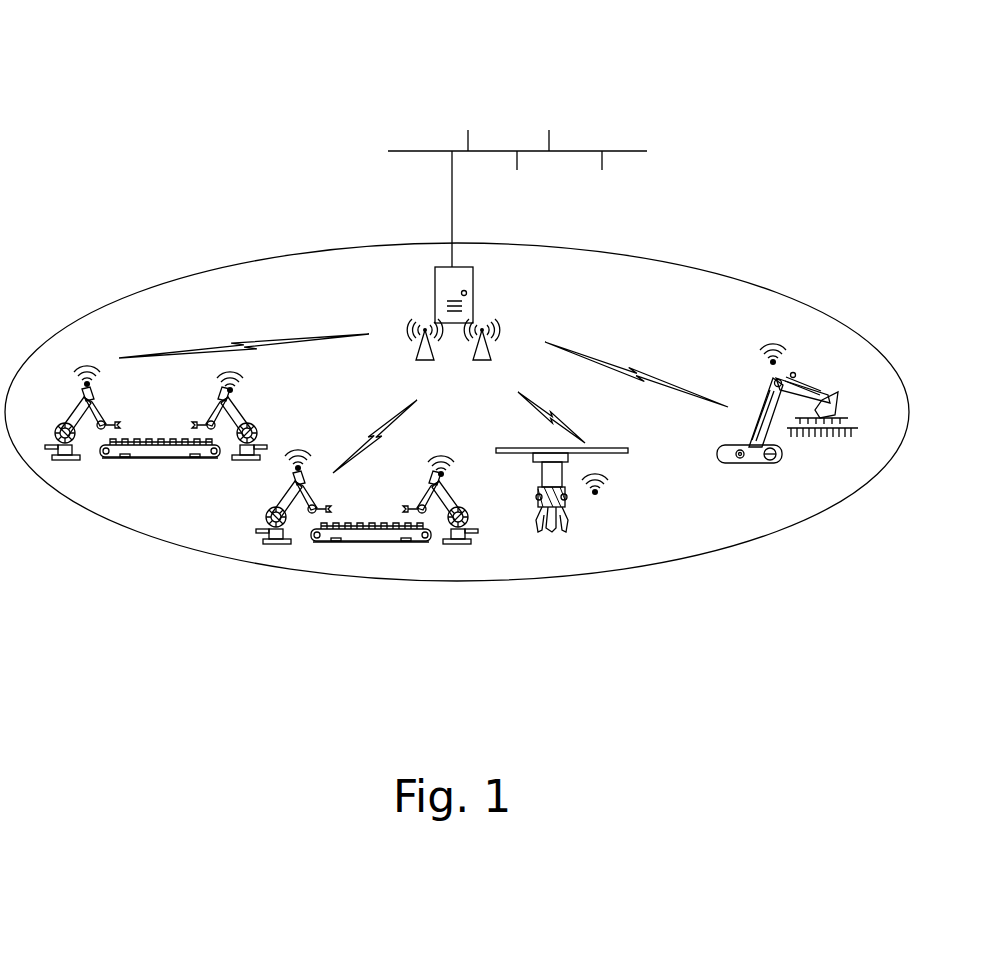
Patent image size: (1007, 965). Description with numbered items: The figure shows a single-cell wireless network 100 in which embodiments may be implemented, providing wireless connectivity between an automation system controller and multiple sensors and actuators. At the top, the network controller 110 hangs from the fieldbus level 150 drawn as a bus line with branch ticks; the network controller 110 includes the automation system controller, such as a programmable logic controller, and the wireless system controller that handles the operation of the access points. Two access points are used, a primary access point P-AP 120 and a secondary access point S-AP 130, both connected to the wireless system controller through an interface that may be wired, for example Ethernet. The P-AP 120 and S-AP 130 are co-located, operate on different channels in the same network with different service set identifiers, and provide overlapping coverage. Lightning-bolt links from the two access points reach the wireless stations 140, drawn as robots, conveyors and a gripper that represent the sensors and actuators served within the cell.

The industrial wireless network system 100 is at (96, 109).
The network controller 110 is at (463, 267).
The primary access point (P-AP) 120 is at (415, 348).
The secondary access point (S-AP) 130 is at (480, 340).
The wireless field devices / robots 140 is at (55, 453).
The fieldbus level 150 is at (404, 148).